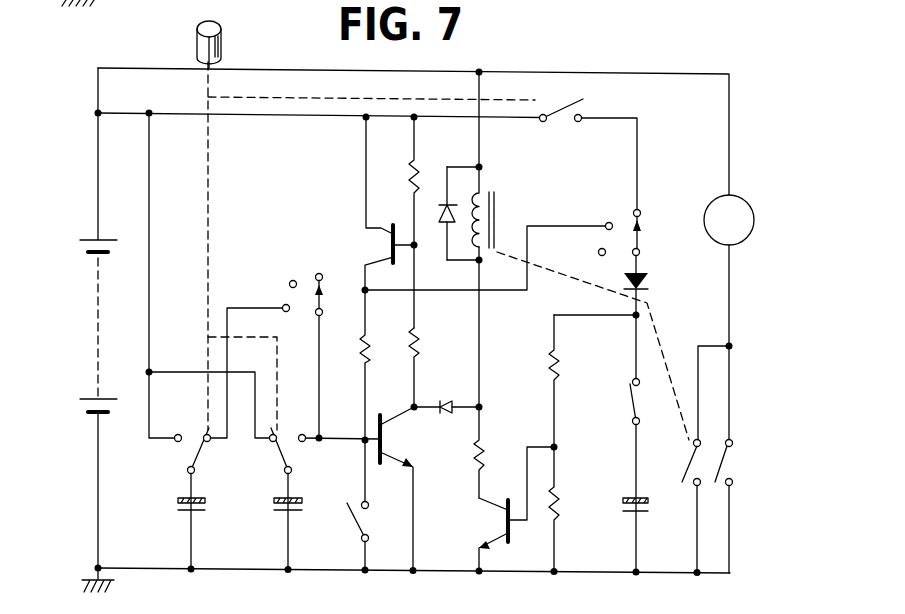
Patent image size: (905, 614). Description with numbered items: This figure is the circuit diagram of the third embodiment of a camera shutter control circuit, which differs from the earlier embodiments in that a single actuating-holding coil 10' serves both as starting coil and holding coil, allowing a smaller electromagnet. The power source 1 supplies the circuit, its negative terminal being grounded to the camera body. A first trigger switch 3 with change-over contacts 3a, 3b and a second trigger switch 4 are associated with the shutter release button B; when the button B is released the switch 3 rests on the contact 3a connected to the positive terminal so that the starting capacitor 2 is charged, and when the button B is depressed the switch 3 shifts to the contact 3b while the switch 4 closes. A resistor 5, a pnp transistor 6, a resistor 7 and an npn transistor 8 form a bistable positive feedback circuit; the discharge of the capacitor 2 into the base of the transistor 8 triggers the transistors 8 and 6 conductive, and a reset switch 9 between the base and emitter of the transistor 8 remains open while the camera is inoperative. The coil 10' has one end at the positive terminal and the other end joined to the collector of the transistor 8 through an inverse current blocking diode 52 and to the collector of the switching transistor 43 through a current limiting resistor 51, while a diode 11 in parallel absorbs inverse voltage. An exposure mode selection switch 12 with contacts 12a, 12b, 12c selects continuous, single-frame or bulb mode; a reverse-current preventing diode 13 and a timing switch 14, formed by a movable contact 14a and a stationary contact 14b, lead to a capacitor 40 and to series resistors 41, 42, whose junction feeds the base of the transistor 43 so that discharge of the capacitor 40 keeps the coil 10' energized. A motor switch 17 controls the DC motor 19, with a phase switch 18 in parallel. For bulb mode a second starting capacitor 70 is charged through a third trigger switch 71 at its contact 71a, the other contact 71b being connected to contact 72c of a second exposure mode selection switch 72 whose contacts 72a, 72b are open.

The power source 1 is at (98, 322).
The shutter release button B is at (221, 42).
The starting capacitor 2 is at (273, 511).
The first trigger switch 3 is at (280, 438).
The change-over contact 3a is at (272, 443).
The change-over contact 3b is at (304, 443).
The second trigger switch 4 is at (576, 102).
The resistor 5 is at (420, 343).
The pnp transistor 6 is at (386, 239).
The resistor 7 is at (370, 345).
The npn transistor 8 is at (385, 428).
The reset switch 9 is at (366, 518).
The actuating-holding coil 10' is at (580, 303).
The diode 11 is at (447, 228).
The exposure mode selection switch 12 is at (641, 229).
The change-over contact 12a is at (641, 211).
The change-over contact 12b is at (607, 220).
The change-over contact 12c is at (598, 254).
The diode 13 is at (650, 281).
The timing switch 14 is at (632, 421).
The movable contact 14a is at (630, 388).
The stationary contact 14b is at (640, 394).
The motor switch 17 is at (688, 466).
The phase switch 18 is at (731, 462).
The DC motor 19 is at (736, 196).
The capacitor 40 is at (622, 513).
The resistor 41 is at (560, 365).
The resistor 42 is at (560, 500).
The switching transistor 43 is at (505, 520).
The current limiting resistor 51 is at (484, 456).
The inverse current blocking diode 52 is at (446, 414).
The second starting capacitor 70 is at (176, 507).
The third trigger switch 71 is at (200, 440).
The contact 71a is at (177, 443).
The contact 71b is at (209, 443).
The second exposure mode selection switch 72 is at (323, 312).
The contact 72a is at (318, 272).
The contact 72b is at (290, 282).
The contact 72c is at (284, 306).